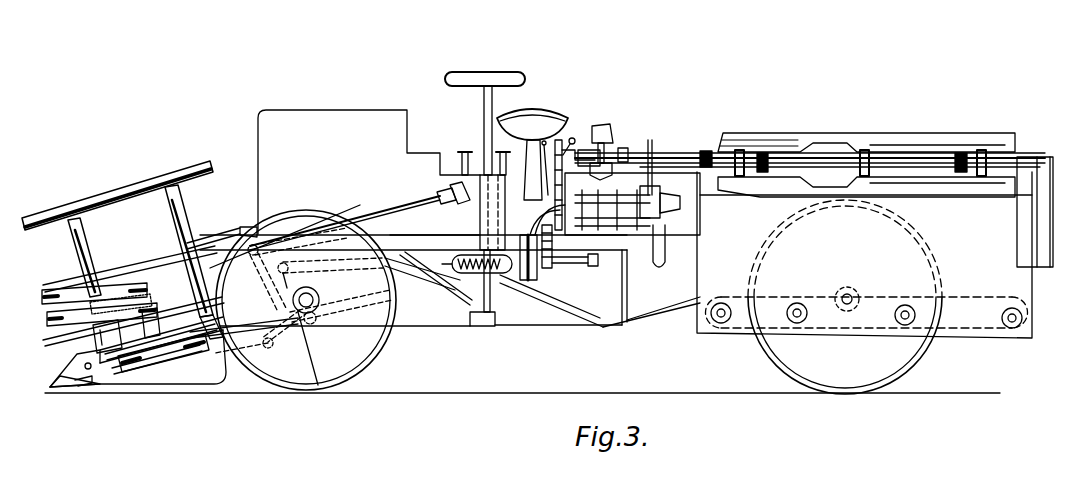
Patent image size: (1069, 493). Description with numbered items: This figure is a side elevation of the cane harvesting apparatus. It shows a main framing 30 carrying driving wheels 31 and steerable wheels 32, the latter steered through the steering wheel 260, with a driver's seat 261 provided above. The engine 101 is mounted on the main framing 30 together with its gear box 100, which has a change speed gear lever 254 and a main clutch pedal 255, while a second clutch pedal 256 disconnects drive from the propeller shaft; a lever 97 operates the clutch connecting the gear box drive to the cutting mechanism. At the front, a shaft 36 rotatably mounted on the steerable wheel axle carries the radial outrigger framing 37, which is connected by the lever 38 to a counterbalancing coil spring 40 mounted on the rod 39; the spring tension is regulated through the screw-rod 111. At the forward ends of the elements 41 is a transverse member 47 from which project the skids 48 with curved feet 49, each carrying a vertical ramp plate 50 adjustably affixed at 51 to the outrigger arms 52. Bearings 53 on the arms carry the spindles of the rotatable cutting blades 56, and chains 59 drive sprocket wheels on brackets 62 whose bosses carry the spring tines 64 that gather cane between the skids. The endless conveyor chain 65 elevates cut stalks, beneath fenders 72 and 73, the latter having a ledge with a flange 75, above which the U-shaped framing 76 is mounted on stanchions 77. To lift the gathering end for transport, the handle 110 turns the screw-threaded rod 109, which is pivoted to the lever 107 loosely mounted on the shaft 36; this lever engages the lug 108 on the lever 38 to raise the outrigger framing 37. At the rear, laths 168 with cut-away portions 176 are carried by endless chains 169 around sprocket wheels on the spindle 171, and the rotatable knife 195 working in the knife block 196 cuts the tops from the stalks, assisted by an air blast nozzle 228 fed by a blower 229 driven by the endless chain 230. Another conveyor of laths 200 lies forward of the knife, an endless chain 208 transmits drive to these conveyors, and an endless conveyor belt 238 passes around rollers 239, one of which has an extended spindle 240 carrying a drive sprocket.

The main framing 30 is at (1040, 209).
The driving wheels 31 is at (892, 392).
The steerable wheels 32 is at (345, 385).
The shaft 36 is at (288, 368).
The outrigger framing 37 is at (270, 347).
The lever 38 is at (292, 318).
The rod 39 is at (415, 270).
The counterbalancing coil spring 40 is at (492, 268).
The elements 41 is at (408, 262).
The transverse member 47 is at (235, 352).
The skids 48 is at (187, 363).
The curved feet 49 is at (55, 388).
The ramp plate 50 is at (70, 370).
The adjustable fixing point 51 is at (90, 368).
The outrigger arms 52 is at (113, 358).
The bearings 53 is at (160, 317).
The rotatable cutting blades 56 is at (207, 374).
The chains 59 is at (92, 322).
The brackets 62 is at (116, 334).
The spring tines 64 is at (122, 298).
The endless conveyor chain 65 is at (140, 364).
The fender 72 is at (218, 228).
The fender 73 is at (255, 227).
The flange 75 is at (177, 258).
The U-shaped framing 76 is at (153, 182).
The stanchions 77 is at (177, 197).
The lever 97 is at (606, 133).
The gear box 100 is at (376, 250).
The engine 101 is at (450, 218).
The lever 107 is at (268, 292).
The lug 108 is at (288, 283).
The screw-threaded rod 109 is at (378, 213).
The handle 110 is at (455, 188).
The screw-rod 111 is at (570, 264).
The laths 168 is at (900, 141).
The endless chains 169 is at (741, 150).
The spindle 171 is at (680, 156).
The cut-away portions 176 is at (830, 141).
The rotatable knife 195 is at (650, 140).
The knife block 196 is at (652, 195).
The laths 200 is at (626, 147).
The endless chain 208 is at (562, 145).
The air blast nozzle 228 is at (680, 203).
The blower 229 is at (548, 270).
The endless chain 230 is at (536, 283).
The endless conveyor belt 238 is at (820, 296).
The rollers 239 is at (735, 320).
The spindle 240 is at (1005, 315).
The change speed gear lever 254 is at (485, 147).
The main clutch pedal 255 is at (503, 157).
The second clutch pedal 256 is at (460, 150).
The steering wheel 260 is at (487, 72).
The driver's seat 261 is at (536, 111).